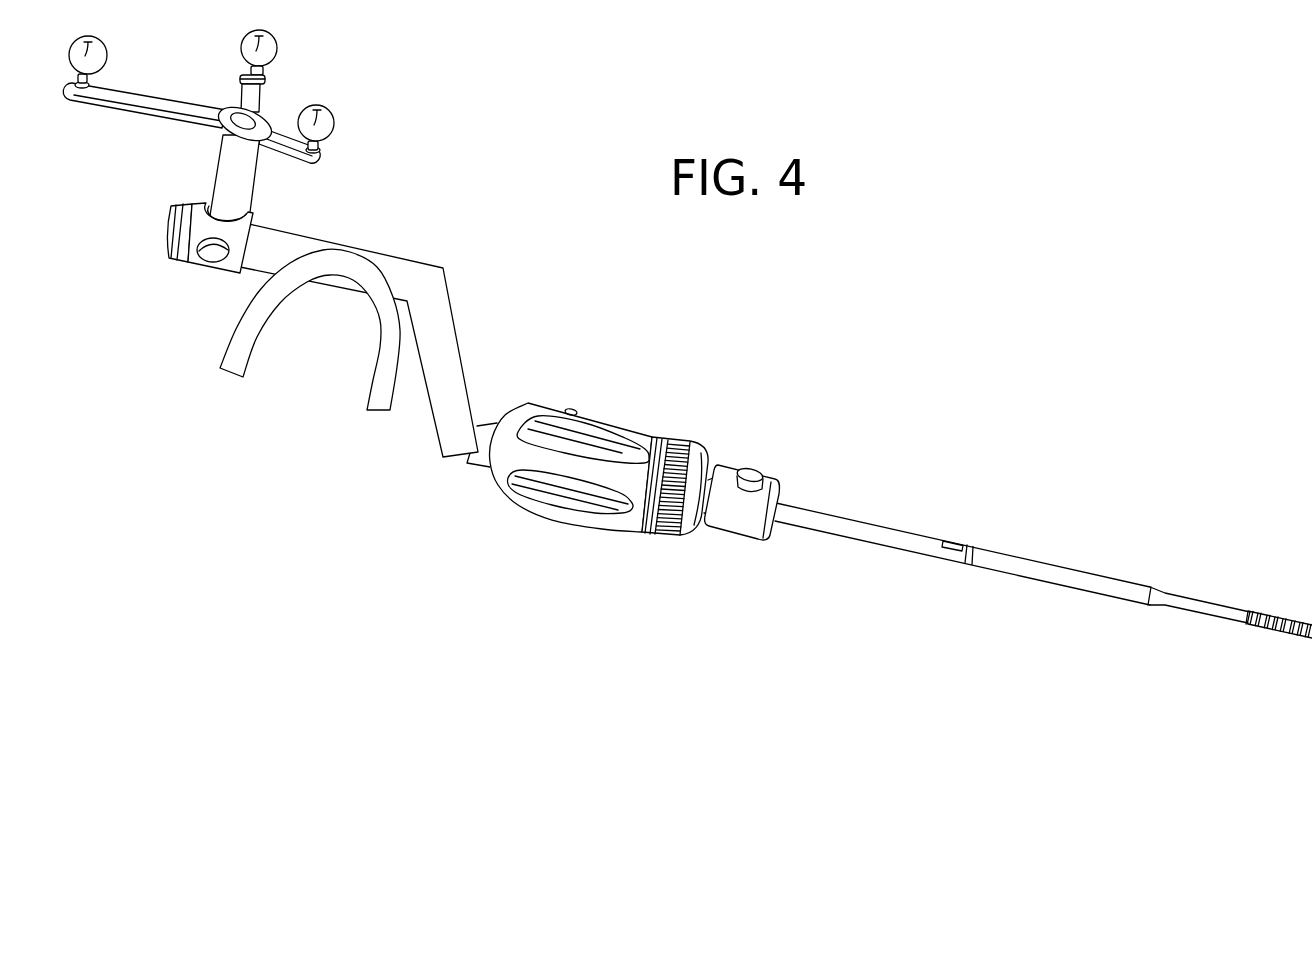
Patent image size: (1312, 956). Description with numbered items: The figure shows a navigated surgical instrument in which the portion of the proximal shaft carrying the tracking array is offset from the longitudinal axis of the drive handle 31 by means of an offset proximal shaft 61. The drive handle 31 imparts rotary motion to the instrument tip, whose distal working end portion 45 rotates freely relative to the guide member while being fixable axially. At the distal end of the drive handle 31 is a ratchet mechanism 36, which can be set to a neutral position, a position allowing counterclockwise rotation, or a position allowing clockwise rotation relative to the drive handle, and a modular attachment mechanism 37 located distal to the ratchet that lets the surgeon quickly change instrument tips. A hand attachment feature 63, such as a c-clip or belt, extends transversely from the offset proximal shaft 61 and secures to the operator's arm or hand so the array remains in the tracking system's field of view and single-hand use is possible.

The drive handle 31 is at (576, 397).
The ratchet mechanism 36 is at (685, 430).
The modular attachment mechanism 37 is at (778, 530).
The distal working end portion 45 is at (1298, 644).
The offset proximal shaft 61 is at (454, 309).
The hand attachment feature 63 is at (263, 333).